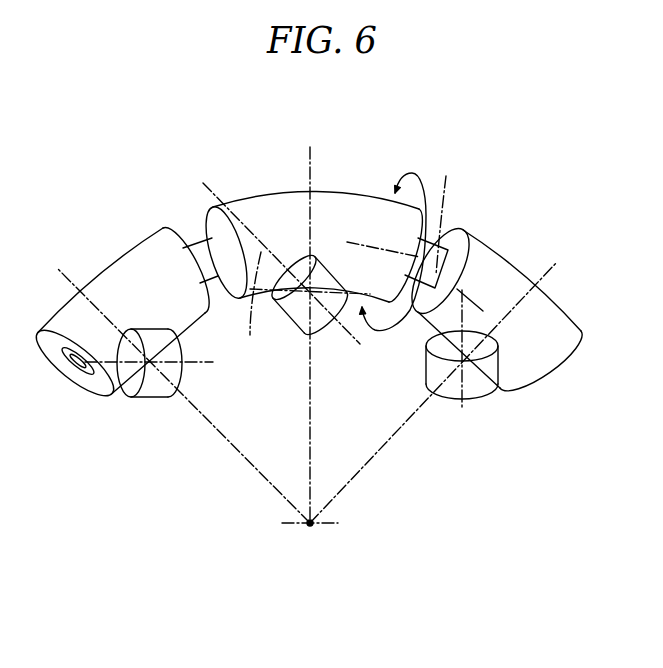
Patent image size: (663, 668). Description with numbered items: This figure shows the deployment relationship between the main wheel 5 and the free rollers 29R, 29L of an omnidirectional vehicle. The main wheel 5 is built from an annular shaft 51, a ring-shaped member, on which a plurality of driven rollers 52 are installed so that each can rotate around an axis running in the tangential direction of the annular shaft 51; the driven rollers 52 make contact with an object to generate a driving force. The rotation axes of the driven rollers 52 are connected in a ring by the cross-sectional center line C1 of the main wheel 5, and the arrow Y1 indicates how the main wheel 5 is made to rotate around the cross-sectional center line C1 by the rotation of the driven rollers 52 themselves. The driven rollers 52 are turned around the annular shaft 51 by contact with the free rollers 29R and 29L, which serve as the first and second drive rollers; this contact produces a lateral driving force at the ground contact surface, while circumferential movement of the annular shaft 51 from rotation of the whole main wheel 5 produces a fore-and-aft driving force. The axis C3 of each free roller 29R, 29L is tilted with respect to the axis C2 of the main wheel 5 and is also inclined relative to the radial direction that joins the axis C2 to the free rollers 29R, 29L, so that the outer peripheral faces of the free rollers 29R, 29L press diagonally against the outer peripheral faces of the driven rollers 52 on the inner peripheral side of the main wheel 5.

The main wheel 5 is at (488, 203).
The annular shaft 51 is at (199, 245).
The driven roller 52 is at (283, 192).
The arrow Y1 is at (410, 172).
The cross-sectional center line C1 is at (450, 209).
The axis of the main wheel C2 is at (310, 527).
The axis of the free roller C3 is at (250, 335).
The free roller 29R is at (328, 332).
The free roller 29L is at (309, 369).